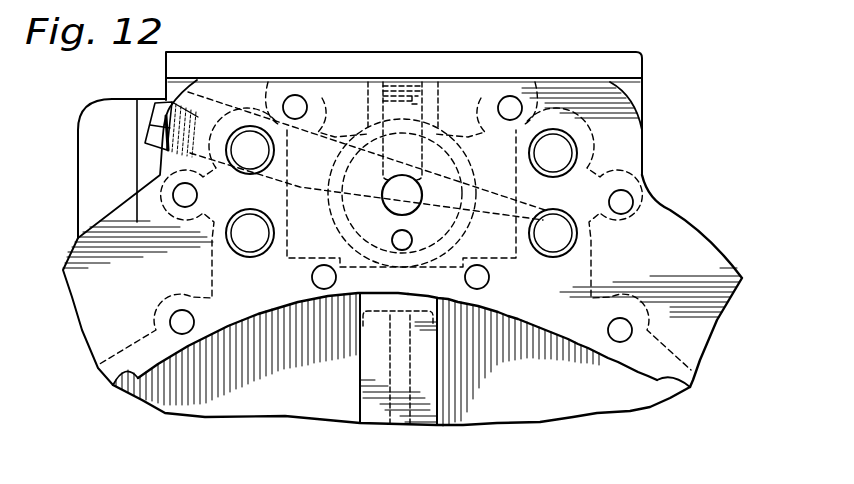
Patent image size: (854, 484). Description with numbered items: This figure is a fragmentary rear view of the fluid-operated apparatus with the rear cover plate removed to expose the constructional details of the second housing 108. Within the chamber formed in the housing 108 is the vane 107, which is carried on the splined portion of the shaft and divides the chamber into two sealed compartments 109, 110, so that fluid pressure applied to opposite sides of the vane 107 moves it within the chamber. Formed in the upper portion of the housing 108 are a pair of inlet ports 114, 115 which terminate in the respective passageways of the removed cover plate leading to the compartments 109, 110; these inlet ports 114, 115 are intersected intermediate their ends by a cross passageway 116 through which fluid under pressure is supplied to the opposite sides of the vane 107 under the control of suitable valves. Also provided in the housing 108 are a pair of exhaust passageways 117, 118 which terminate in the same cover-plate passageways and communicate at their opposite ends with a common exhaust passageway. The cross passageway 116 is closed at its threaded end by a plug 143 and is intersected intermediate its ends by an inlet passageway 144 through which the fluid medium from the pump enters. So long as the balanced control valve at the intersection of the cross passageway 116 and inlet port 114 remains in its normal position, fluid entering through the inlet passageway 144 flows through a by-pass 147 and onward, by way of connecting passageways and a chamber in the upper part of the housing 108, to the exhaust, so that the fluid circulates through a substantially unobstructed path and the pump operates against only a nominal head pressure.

The vane 107 is at (380, 388).
The second housing 108 is at (633, 97).
The sealed compartment 109 is at (230, 392).
The sealed compartment 110 is at (540, 405).
The inlet port 114 is at (250, 156).
The inlet port 115 is at (556, 264).
The cross passageway 116 is at (550, 191).
The exhaust passageway 117 is at (253, 240).
The exhaust passageway 118 is at (565, 158).
The plug 143 is at (140, 101).
The inlet passageway 144 is at (429, 87).
The by-pass 147 is at (400, 205).